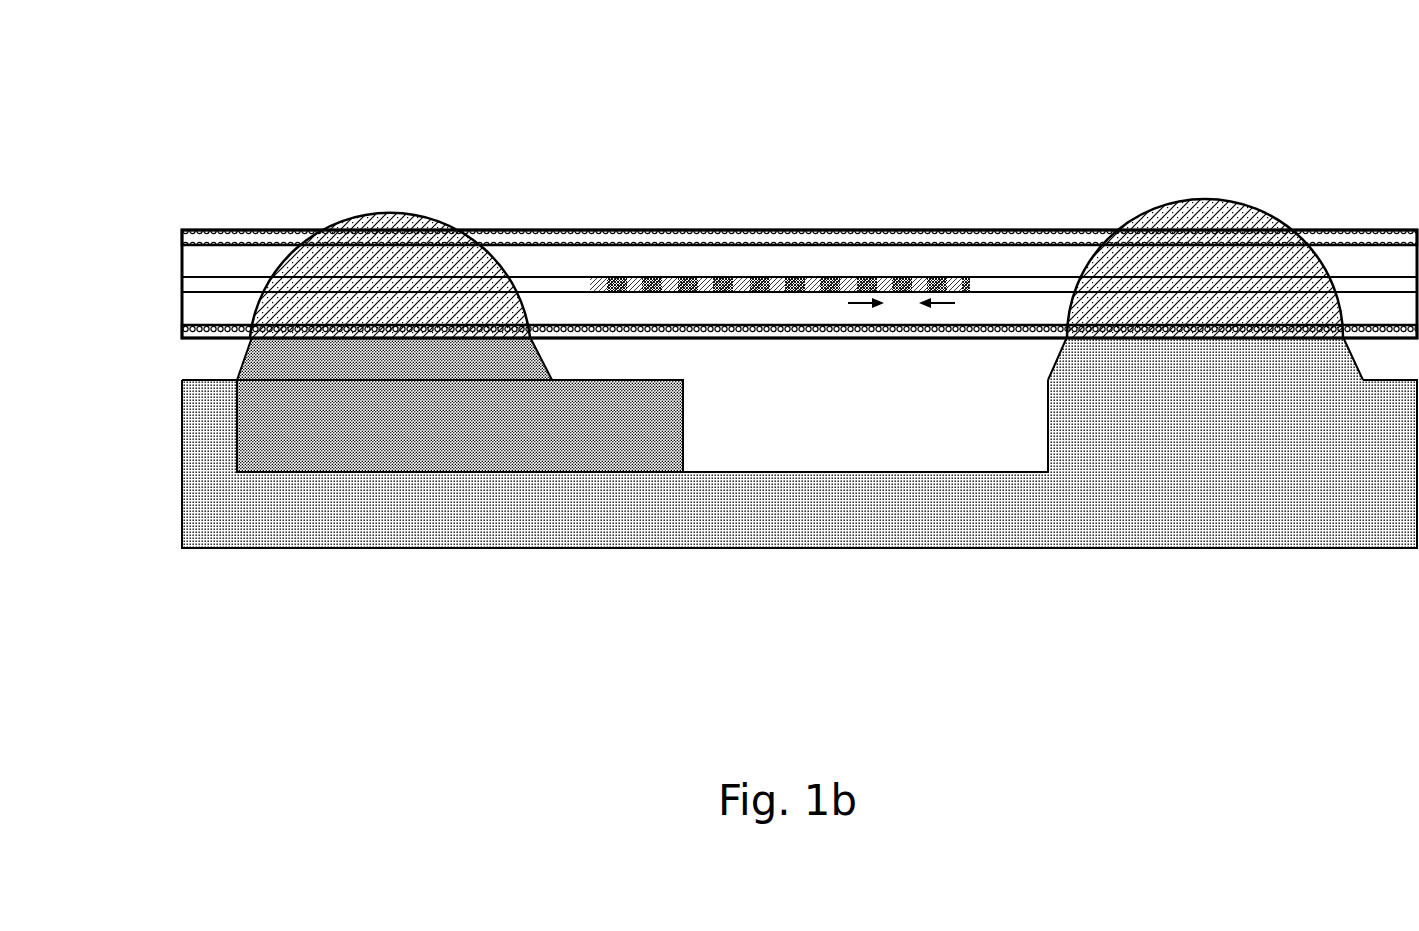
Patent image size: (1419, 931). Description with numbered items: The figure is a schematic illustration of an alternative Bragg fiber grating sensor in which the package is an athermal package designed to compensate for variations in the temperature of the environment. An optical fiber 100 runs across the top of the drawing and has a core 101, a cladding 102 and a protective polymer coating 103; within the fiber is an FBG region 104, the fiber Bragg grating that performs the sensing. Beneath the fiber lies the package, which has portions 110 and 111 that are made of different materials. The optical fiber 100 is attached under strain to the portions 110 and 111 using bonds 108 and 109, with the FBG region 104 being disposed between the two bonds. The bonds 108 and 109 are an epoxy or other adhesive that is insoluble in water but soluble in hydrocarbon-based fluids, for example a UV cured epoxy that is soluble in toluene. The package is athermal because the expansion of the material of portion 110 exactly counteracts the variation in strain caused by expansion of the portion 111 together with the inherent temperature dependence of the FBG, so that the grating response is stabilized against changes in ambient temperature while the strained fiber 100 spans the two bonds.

The fiber 100 is at (182, 324).
The core 101 is at (202, 288).
The cladding 102 is at (253, 263).
The protective polymer coating 103 is at (563, 232).
The FBG region 104 is at (778, 277).
The bond 108 is at (1197, 217).
The bond 109 is at (385, 215).
The portion 110 is at (810, 515).
The portion 111 is at (448, 420).